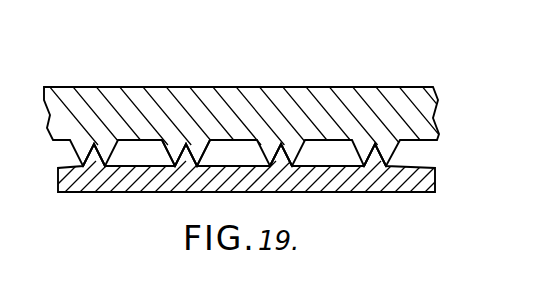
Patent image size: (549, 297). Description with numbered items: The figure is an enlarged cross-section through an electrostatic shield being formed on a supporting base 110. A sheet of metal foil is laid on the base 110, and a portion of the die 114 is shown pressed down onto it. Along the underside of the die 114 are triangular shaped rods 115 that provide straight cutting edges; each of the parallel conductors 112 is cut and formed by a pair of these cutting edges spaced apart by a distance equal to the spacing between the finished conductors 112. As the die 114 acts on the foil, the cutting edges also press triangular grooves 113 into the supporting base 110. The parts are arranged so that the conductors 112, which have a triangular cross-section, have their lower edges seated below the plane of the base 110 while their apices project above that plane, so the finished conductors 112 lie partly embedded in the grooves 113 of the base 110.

The die 114 is at (419, 87).
The supporting base 110 is at (338, 192).
The parallel conductors 112 is at (288, 165).
The triangular grooves 113 is at (173, 165).
The triangular shaped rods 115 is at (262, 160).